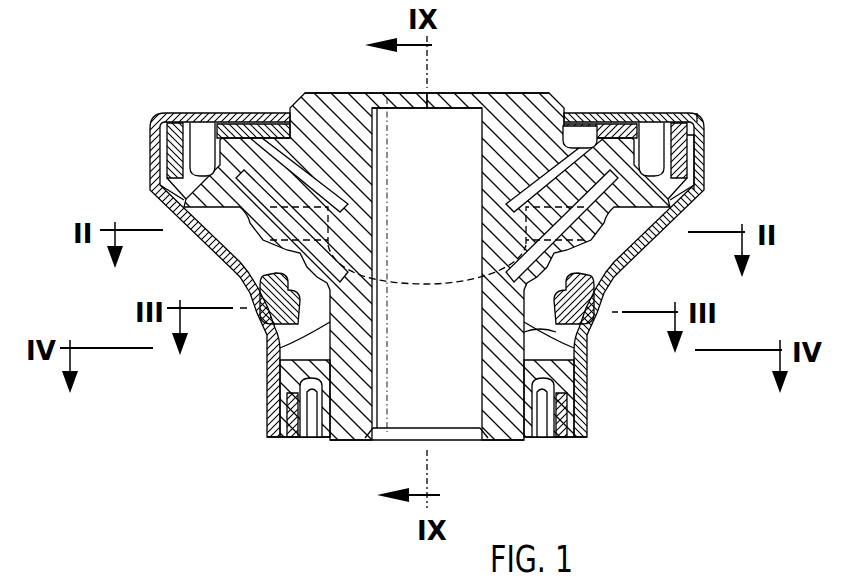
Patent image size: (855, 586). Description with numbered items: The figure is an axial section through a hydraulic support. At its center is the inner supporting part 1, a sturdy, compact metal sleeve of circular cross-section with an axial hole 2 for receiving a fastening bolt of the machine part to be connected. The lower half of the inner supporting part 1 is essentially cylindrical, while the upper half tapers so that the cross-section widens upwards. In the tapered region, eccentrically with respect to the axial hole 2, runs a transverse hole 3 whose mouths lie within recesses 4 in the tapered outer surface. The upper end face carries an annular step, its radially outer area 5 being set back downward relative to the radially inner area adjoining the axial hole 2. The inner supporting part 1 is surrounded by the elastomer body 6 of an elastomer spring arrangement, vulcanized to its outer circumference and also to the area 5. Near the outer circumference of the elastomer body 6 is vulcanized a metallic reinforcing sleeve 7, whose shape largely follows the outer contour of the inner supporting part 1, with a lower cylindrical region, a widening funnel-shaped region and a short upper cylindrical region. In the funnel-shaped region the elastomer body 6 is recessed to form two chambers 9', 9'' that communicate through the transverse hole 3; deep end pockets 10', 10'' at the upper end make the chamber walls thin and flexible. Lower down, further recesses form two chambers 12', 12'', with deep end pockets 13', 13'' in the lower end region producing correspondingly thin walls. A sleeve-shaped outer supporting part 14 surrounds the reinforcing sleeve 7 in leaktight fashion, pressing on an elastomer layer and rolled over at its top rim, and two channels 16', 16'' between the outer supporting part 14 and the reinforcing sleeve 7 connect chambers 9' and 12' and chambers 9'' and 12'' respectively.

The inner supporting part 1 is at (514, 125).
The axial hole 2 is at (456, 108).
The transverse hole 3 is at (397, 213).
The recesses 4 is at (427, 272).
The radially outer area 5 is at (578, 133).
The elastomer body 6 is at (556, 332).
The reinforcing sleeve 7 is at (712, 163).
The chamber 9' is at (240, 275).
The chamber 9'' is at (614, 275).
The end pocket 10' is at (225, 131).
The end pocket 10'' is at (629, 129).
The chamber 12' is at (270, 379).
The chamber 12'' is at (581, 379).
The end pocket 13' is at (281, 438).
The end pocket 13'' is at (566, 438).
The outer supporting part 14 is at (702, 124).
The channel 16' is at (241, 297).
The channel 16'' is at (614, 298).